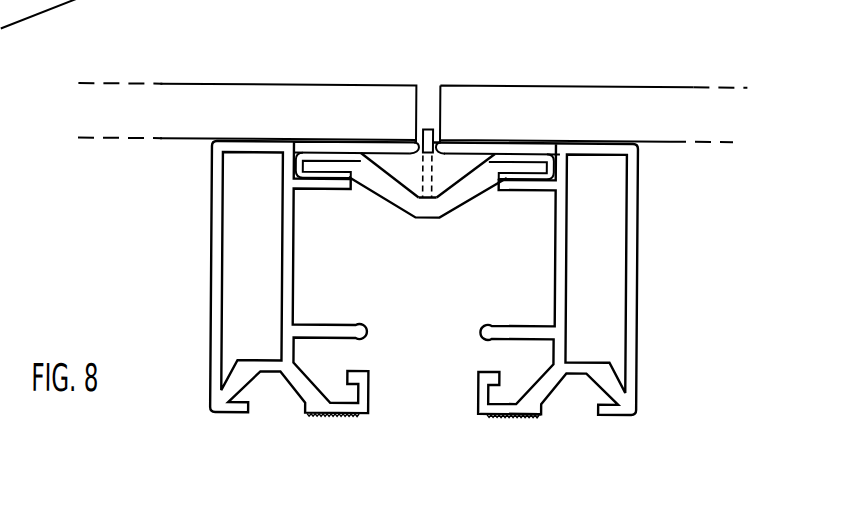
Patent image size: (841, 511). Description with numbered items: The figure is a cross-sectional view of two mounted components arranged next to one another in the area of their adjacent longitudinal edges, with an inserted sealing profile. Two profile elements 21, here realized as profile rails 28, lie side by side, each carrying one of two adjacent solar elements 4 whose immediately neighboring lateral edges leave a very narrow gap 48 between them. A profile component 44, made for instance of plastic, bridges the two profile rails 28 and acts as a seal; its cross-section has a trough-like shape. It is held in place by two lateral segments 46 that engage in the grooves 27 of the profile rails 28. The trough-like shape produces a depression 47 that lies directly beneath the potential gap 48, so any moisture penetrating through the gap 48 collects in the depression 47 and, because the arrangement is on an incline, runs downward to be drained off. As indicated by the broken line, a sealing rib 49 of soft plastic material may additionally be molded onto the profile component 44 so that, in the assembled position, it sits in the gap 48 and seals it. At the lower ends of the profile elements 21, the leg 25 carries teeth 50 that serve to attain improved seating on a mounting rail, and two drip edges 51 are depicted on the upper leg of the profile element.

The solar element 4 is at (207, 82).
The profile element 21 is at (207, 187).
The leg 25 is at (529, 416).
The groove 27 is at (329, 143).
The profile rail 28 is at (218, 242).
The profile component 44 is at (392, 214).
The lateral segment 46 is at (323, 166).
The depression 47 is at (397, 170).
The gap 48 is at (425, 94).
The sealing rib 49 is at (432, 177).
The teeth 50 is at (333, 414).
The drip edge 51 is at (417, 146).